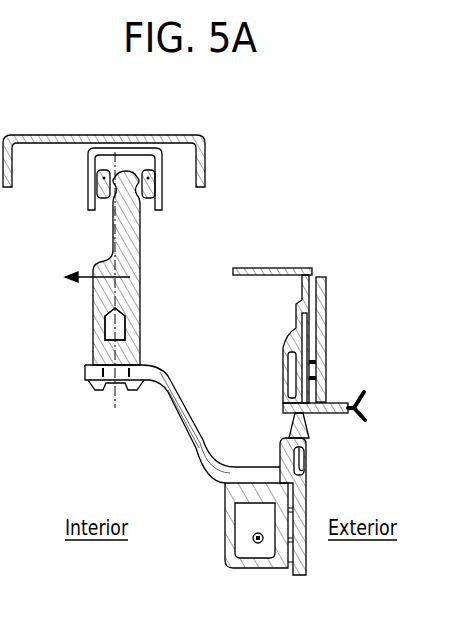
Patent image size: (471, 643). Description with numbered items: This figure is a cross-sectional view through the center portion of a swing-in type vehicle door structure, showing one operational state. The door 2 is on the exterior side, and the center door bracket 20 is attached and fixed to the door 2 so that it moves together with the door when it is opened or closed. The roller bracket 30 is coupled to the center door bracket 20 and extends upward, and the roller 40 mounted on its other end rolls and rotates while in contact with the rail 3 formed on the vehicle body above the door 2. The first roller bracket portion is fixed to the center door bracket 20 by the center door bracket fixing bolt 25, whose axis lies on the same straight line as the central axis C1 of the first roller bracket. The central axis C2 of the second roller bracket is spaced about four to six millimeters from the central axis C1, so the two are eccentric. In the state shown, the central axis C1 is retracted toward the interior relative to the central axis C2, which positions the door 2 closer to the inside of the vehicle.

The door 2 is at (290, 463).
The rail 3 is at (163, 158).
The center door bracket 20 is at (187, 424).
The center door bracket fixing bolt 25 is at (97, 391).
The roller bracket 30 is at (142, 280).
The roller 40 is at (158, 187).
The central axis of the first roller bracket C1 is at (116, 354).
The central axis of the second roller bracket C2 is at (125, 232).